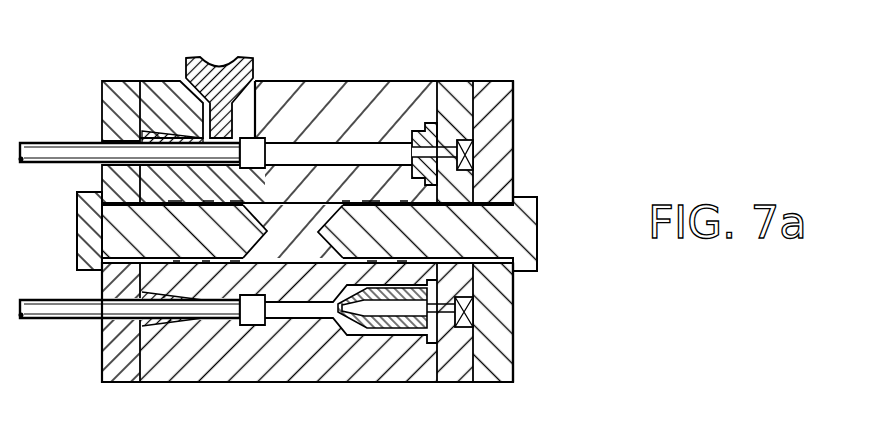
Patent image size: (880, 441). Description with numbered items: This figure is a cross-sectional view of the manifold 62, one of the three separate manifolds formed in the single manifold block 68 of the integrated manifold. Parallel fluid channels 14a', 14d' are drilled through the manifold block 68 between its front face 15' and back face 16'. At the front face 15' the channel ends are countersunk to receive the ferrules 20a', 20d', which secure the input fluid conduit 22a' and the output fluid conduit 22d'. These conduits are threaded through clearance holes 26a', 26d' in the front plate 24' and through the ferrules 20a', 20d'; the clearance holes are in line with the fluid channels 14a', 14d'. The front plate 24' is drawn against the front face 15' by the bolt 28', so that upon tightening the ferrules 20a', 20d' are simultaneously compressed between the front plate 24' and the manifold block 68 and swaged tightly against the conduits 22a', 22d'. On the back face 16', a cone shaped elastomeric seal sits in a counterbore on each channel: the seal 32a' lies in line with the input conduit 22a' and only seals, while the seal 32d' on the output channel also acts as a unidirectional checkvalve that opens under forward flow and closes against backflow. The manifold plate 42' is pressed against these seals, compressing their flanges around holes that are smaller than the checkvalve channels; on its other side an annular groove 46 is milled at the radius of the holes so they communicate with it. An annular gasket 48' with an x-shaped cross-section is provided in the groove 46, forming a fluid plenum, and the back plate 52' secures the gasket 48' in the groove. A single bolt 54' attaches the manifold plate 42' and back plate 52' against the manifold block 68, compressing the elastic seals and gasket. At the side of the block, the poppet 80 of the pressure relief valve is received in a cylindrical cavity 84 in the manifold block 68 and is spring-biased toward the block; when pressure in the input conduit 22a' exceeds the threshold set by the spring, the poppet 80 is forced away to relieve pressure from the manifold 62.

The manifold block 68 is at (348, 97).
The front plate 24' is at (121, 120).
The ferrule 20a' is at (202, 105).
The clearance hole 26a' is at (118, 94).
The input fluid conduit 22a' is at (125, 132).
The poppet 80 is at (217, 68).
The cylindrical cavity 84 is at (252, 118).
The fluid channel 14a' is at (338, 102).
The seal 32a' is at (424, 112).
The manifold plate 42' is at (462, 194).
The annular groove 46 is at (480, 87).
The annular gasket 48' is at (510, 155).
The back plate 52' is at (533, 107).
The back face 16' is at (508, 334).
The bolt 54' is at (453, 234).
The bolt 28' is at (138, 231).
The ferrule 20d' is at (307, 343).
The front face 15' is at (120, 343).
The output fluid conduit 22d' is at (125, 331).
The clearance hole 26d' is at (114, 357).
The fluid channel 14d' is at (351, 351).
The cone shaped seal 32d' is at (396, 355).
The manifold 62 is at (598, 118).